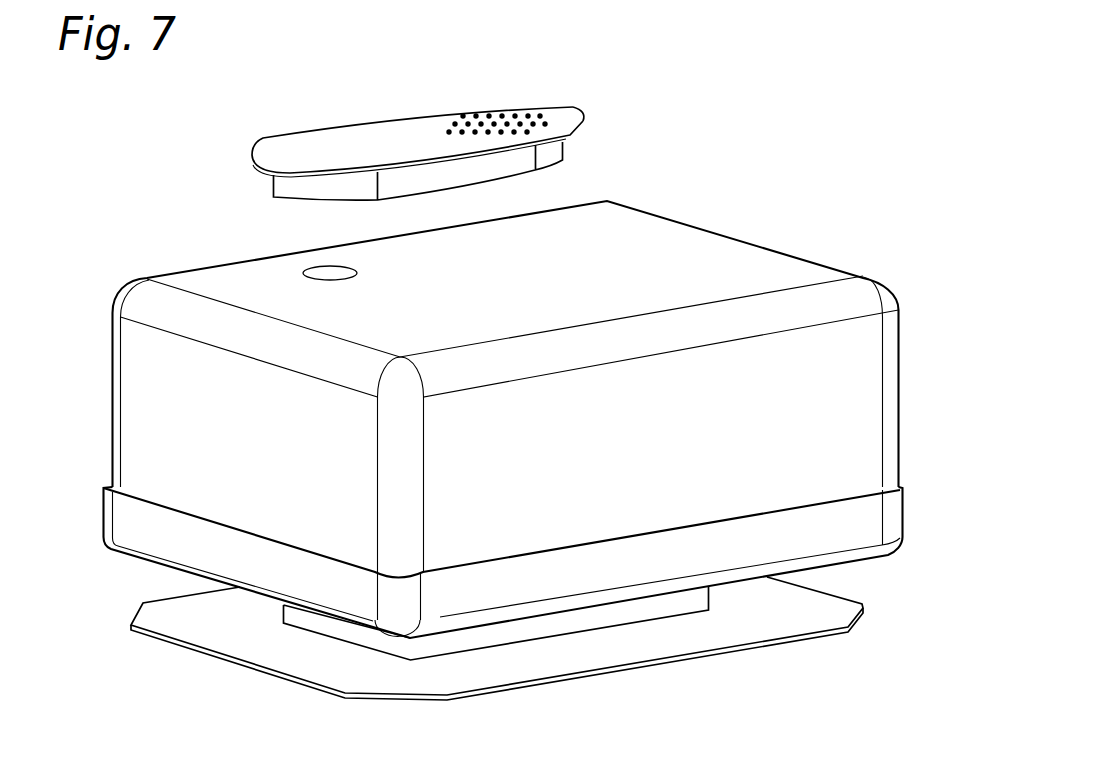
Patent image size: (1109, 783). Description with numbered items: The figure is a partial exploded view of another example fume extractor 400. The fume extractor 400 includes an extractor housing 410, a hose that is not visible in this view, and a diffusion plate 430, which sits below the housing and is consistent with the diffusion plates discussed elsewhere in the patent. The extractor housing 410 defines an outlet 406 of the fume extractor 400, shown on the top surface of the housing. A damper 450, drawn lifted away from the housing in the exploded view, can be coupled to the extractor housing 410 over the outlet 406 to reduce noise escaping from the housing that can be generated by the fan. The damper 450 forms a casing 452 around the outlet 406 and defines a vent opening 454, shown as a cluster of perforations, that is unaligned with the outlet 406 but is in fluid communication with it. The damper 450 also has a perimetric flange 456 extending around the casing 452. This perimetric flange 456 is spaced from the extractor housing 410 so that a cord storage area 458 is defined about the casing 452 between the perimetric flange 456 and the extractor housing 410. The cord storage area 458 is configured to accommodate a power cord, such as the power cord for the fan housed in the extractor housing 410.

The fume extractor 400 is at (205, 198).
The outlet 406 is at (324, 258).
The extractor housing 410 is at (775, 236).
The diffusion plate 430 is at (777, 663).
The damper 450 is at (316, 108).
The casing 452 is at (397, 128).
The vent opening 454 is at (487, 123).
The perimetric flange 456 is at (573, 118).
The cord storage area 458 is at (503, 165).